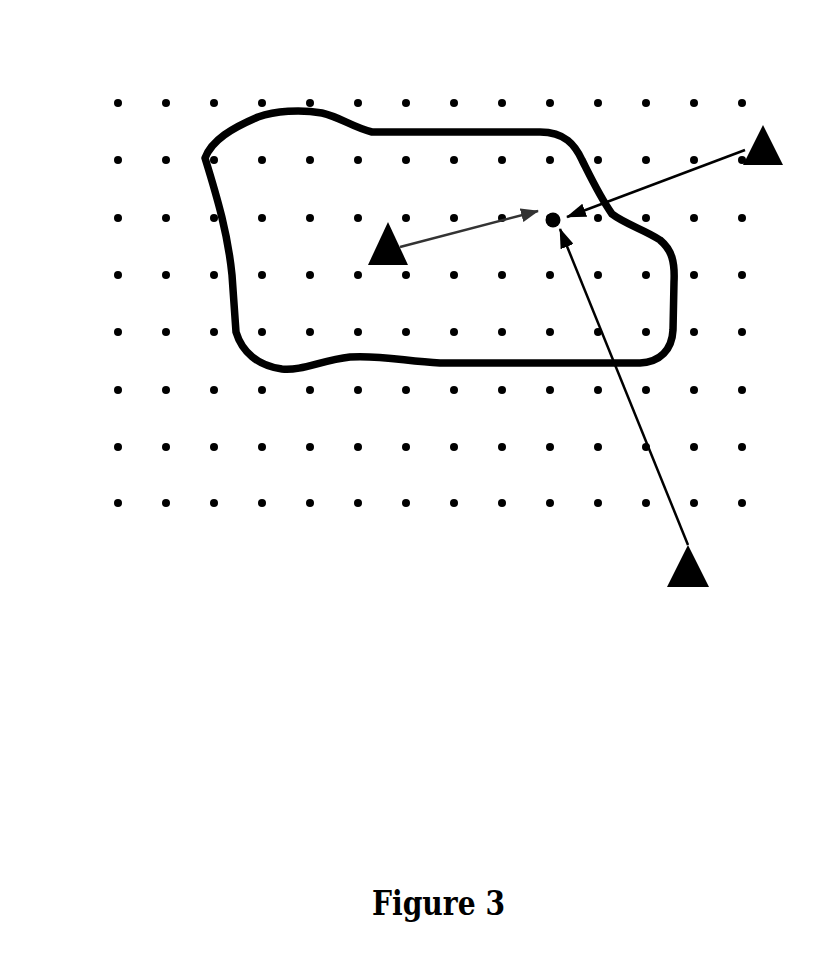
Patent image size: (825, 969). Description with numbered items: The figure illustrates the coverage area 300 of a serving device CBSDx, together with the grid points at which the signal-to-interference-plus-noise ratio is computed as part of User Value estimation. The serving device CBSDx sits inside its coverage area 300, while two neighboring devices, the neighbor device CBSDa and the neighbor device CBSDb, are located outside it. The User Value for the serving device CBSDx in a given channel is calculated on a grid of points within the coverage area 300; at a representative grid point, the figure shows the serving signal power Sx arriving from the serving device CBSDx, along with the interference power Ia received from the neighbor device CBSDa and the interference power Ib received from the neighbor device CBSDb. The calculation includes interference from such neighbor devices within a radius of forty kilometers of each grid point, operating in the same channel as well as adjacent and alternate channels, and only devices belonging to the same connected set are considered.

The coverage area 300 is at (242, 97).
The CBSD x CBSDx is at (376, 278).
The CBSD a CBSDa is at (675, 597).
The CBSD b CBSDb is at (749, 177).
The signal power of the serving CBSD Sx is at (469, 212).
The interference from CBSD a Ia is at (626, 387).
The interference from CBSD b Ib is at (656, 172).